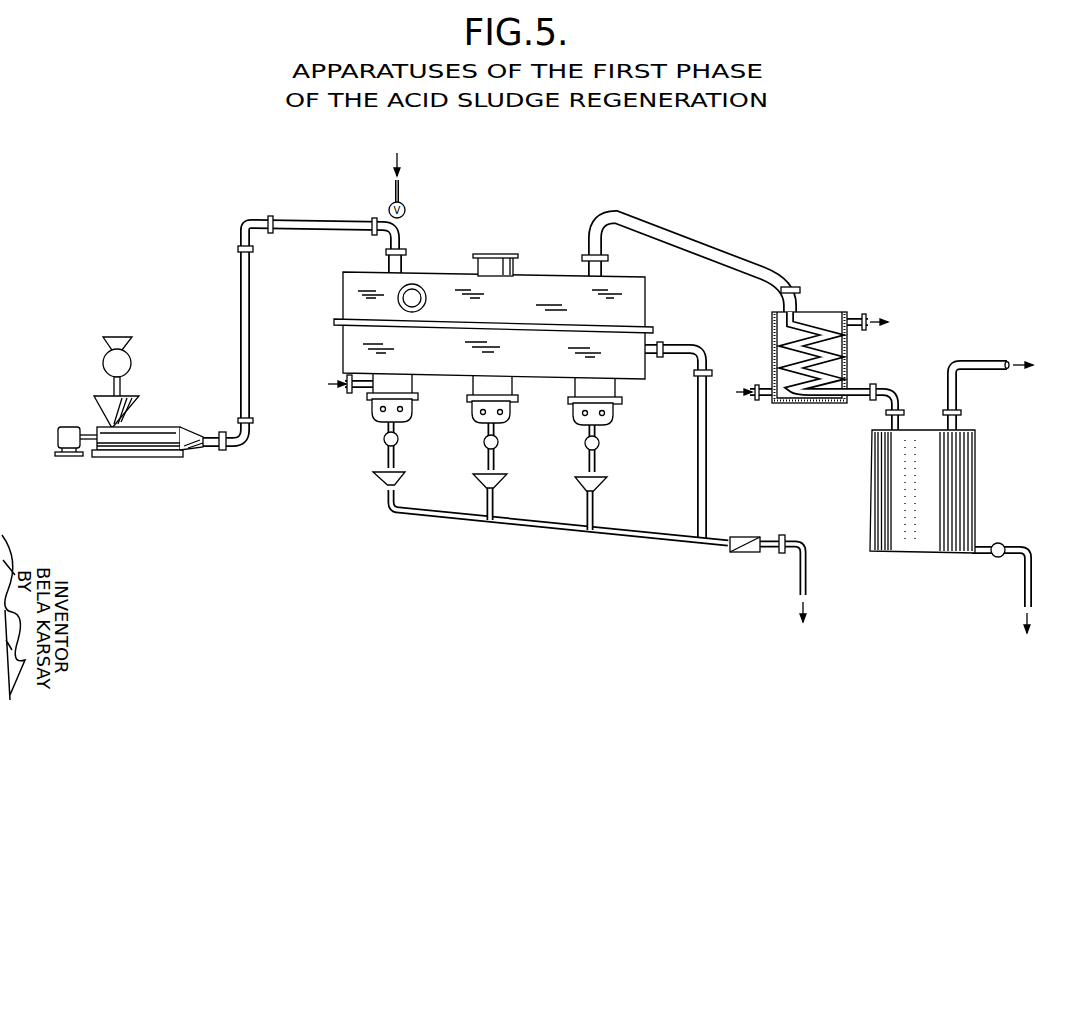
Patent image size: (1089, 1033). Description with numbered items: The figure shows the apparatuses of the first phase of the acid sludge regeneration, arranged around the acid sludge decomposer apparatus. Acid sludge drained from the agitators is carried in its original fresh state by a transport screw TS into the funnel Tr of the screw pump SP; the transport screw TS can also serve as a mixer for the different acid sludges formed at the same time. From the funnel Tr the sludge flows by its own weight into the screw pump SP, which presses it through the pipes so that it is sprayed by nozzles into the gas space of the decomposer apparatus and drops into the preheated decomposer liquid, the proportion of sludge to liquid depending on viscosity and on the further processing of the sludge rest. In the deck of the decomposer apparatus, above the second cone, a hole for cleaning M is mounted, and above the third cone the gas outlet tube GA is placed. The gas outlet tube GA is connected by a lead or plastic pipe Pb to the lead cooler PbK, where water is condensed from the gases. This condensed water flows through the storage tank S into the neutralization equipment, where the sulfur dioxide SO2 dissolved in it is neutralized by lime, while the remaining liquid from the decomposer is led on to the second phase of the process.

The funnel Tr is at (76, 421).
The transport screw TS is at (131, 367).
The screw pump SP is at (147, 426).
The hole for cleaning M is at (495, 253).
The gas outlet tube GA is at (583, 451).
The lead or plastic pipe Pb is at (734, 244).
The lead cooler PbK is at (820, 356).
The storage tank S is at (972, 521).
The sulfur dioxide SO2 is at (1037, 369).